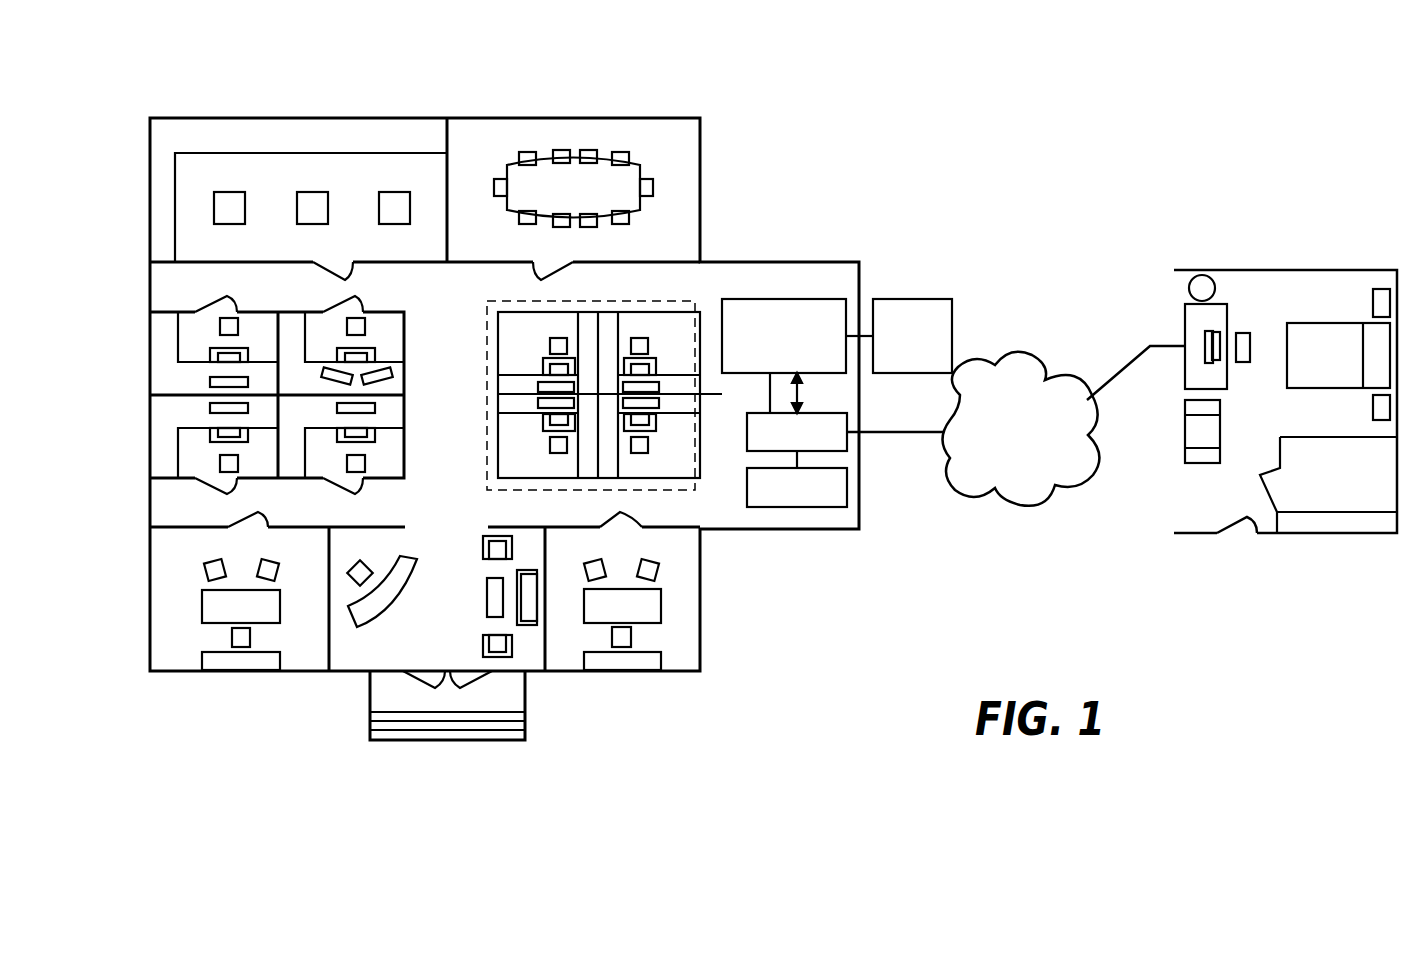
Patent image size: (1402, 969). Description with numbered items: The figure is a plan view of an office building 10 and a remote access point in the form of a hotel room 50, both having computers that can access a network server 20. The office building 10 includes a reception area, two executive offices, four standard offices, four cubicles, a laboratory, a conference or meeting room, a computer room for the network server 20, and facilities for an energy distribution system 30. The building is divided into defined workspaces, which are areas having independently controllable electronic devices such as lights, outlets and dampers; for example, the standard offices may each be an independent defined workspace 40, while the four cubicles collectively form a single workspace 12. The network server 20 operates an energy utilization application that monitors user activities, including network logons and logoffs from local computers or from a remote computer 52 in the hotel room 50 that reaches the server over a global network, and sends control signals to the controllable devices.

The office building 10 is at (667, 381).
The single workspace 12 is at (691, 300).
The network server 20 is at (847, 442).
The energy distribution system 30 is at (808, 299).
The defined workspace 40 is at (388, 335).
The remote access point (hotel room) 50 is at (1276, 346).
The remote computer 52 is at (1215, 332).